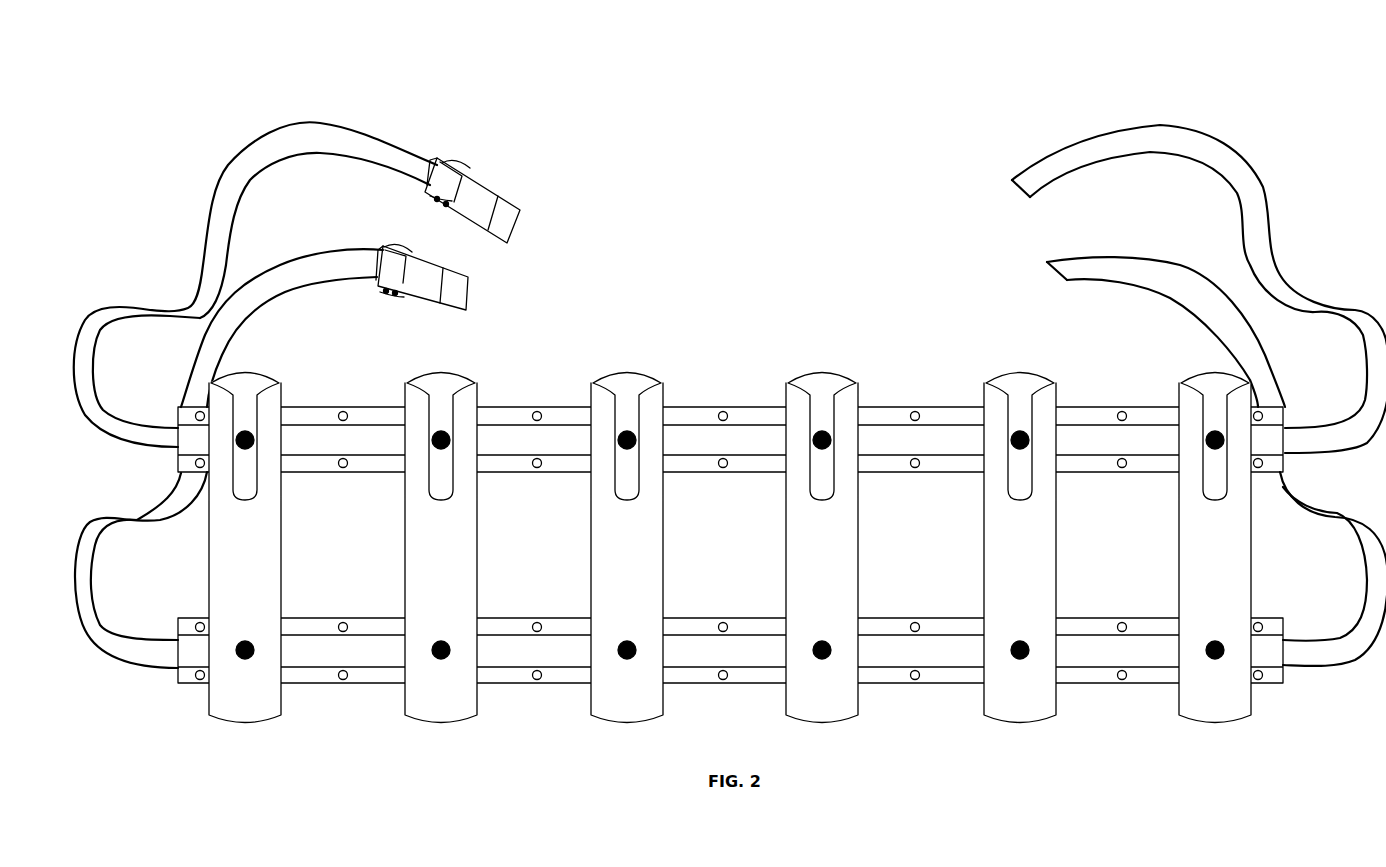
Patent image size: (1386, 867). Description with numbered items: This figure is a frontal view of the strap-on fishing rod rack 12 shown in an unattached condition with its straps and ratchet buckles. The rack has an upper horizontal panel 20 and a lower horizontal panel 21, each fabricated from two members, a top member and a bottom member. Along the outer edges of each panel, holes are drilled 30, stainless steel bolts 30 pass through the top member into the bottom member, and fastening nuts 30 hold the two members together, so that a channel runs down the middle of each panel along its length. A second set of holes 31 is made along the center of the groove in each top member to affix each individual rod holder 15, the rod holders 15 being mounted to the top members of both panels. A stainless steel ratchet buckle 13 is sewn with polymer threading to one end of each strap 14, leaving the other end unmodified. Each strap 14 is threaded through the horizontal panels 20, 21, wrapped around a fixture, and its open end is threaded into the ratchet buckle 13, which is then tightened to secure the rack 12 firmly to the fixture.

The fishing rod rack 12 is at (730, 524).
The ratchet buckle 13 is at (487, 169).
The strap 14 is at (284, 116).
The rod holder 15 is at (236, 729).
The upper horizontal panel 20 is at (747, 405).
The lower horizontal panel 21 is at (685, 692).
The holes, bolts and fastening nuts 30 is at (343, 405).
The second set of holes 31 is at (1031, 434).